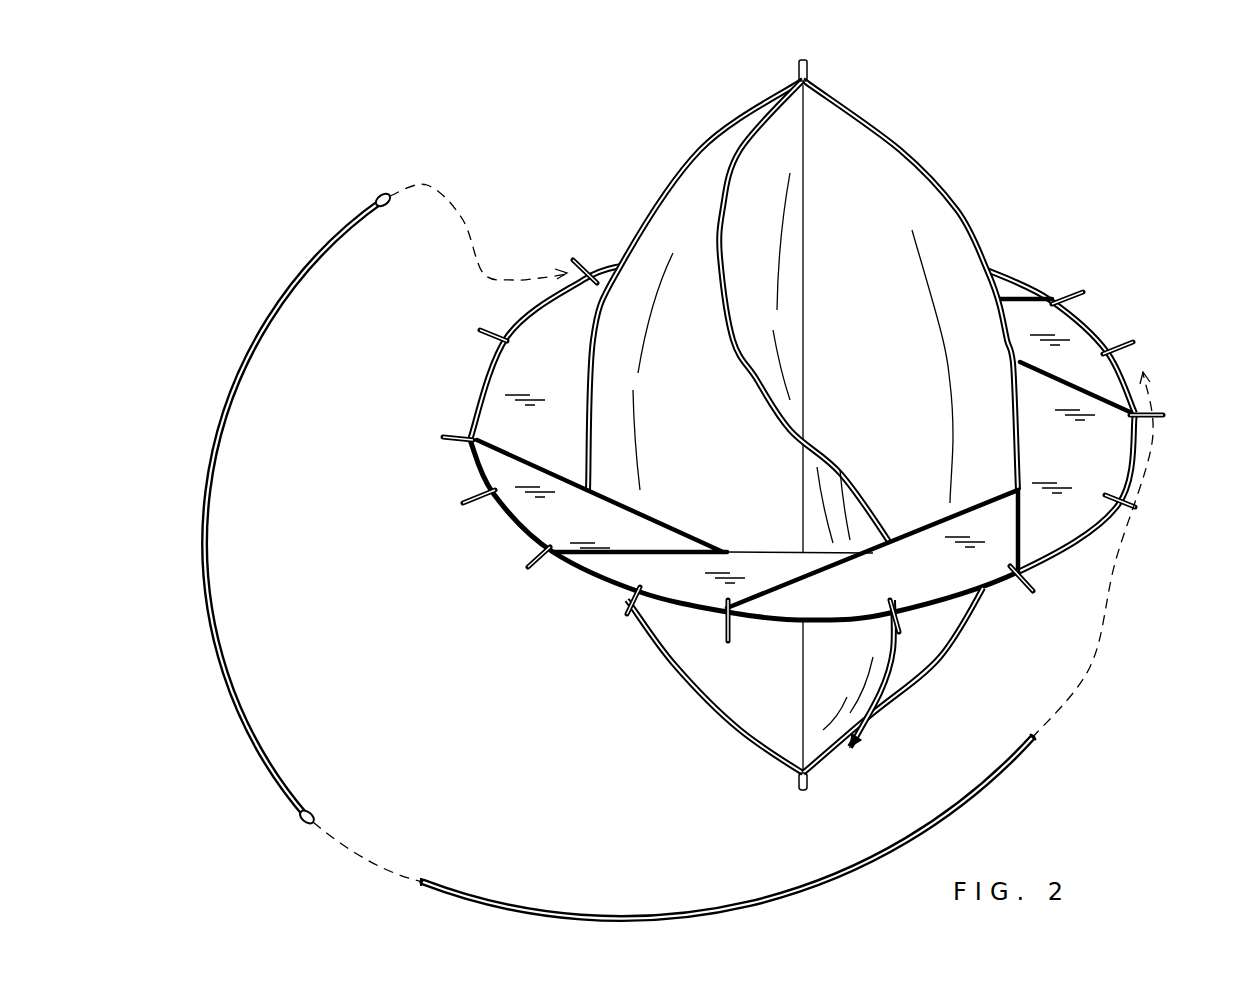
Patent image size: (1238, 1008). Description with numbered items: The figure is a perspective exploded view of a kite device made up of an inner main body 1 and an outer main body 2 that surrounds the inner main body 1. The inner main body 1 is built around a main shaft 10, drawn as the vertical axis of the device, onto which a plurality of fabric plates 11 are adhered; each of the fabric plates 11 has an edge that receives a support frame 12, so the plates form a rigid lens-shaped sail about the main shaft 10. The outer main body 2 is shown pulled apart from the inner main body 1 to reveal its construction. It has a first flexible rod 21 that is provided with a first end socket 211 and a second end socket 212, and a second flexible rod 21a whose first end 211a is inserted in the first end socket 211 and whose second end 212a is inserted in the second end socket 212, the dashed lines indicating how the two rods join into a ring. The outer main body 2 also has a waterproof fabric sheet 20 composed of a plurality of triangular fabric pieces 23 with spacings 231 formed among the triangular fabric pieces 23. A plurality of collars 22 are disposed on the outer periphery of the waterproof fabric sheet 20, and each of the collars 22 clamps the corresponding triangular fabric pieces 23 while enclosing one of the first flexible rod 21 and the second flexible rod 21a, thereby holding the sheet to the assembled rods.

The inner main body 1 is at (816, 414).
The main shaft 10 is at (808, 63).
The fabric plates 11 is at (888, 193).
The support frame 12 is at (703, 148).
The outer main body 2 is at (1117, 332).
The waterproof fabric sheet 20 is at (1045, 296).
The first flexible rod 21 is at (220, 428).
The first end socket 211 is at (384, 198).
The second end socket 212 is at (310, 812).
The second flexible rod 21a is at (850, 865).
The first end 211a is at (1035, 738).
The second end 212a is at (425, 880).
The collars 22 is at (1023, 598).
The triangular fabric pieces 23 is at (528, 517).
The spacings 231 is at (613, 555).